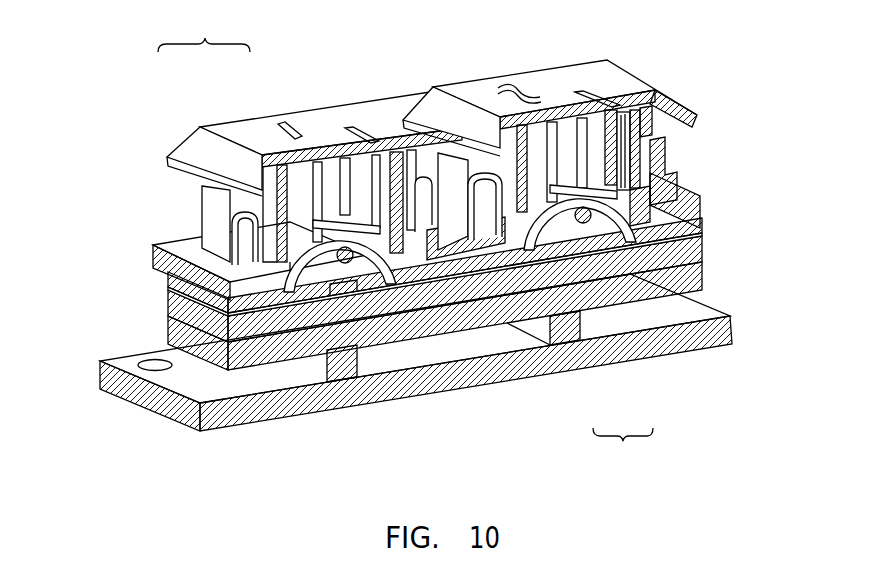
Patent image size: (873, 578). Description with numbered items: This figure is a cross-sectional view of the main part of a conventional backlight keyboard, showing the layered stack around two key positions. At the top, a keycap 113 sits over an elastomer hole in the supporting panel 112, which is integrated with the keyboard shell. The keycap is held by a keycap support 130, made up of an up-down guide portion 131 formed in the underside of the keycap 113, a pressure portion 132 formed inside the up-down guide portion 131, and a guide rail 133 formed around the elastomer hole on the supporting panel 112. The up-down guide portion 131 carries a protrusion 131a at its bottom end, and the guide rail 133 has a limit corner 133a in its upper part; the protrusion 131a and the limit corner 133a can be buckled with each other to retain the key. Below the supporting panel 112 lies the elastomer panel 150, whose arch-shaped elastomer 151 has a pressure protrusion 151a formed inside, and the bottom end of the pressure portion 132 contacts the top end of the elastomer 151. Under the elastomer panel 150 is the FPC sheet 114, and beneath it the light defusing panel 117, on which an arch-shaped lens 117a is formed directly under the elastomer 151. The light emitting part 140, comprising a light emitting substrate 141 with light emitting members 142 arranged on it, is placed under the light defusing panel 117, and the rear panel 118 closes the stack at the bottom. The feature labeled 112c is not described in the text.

The keycap support 130 is at (300, 156).
The up-down guide portion 131 is at (282, 195).
The pressure portion 132 is at (315, 200).
The guide rail 133 is at (200, 243).
The limit corner 133a is at (313, 350).
The protrusion 131a is at (280, 258).
The keycap 113 is at (616, 90).
The elastomer 151 is at (670, 163).
The pressure protrusion 151a is at (702, 233).
The elastomer panel 150 is at (703, 218).
The supporting panel 112 is at (700, 200).
The plate protrusion 112c is at (277, 250).
The flexible printed circuit (FPC) sheet 114 is at (167, 278).
The light defusing panel 117 is at (703, 251).
The arch-shaped lens 117a is at (703, 268).
The rear panel 118 is at (732, 318).
The light emitting part 140 is at (623, 444).
The light emitting substrate 141 is at (637, 300).
The light emitting member 142 is at (596, 316).